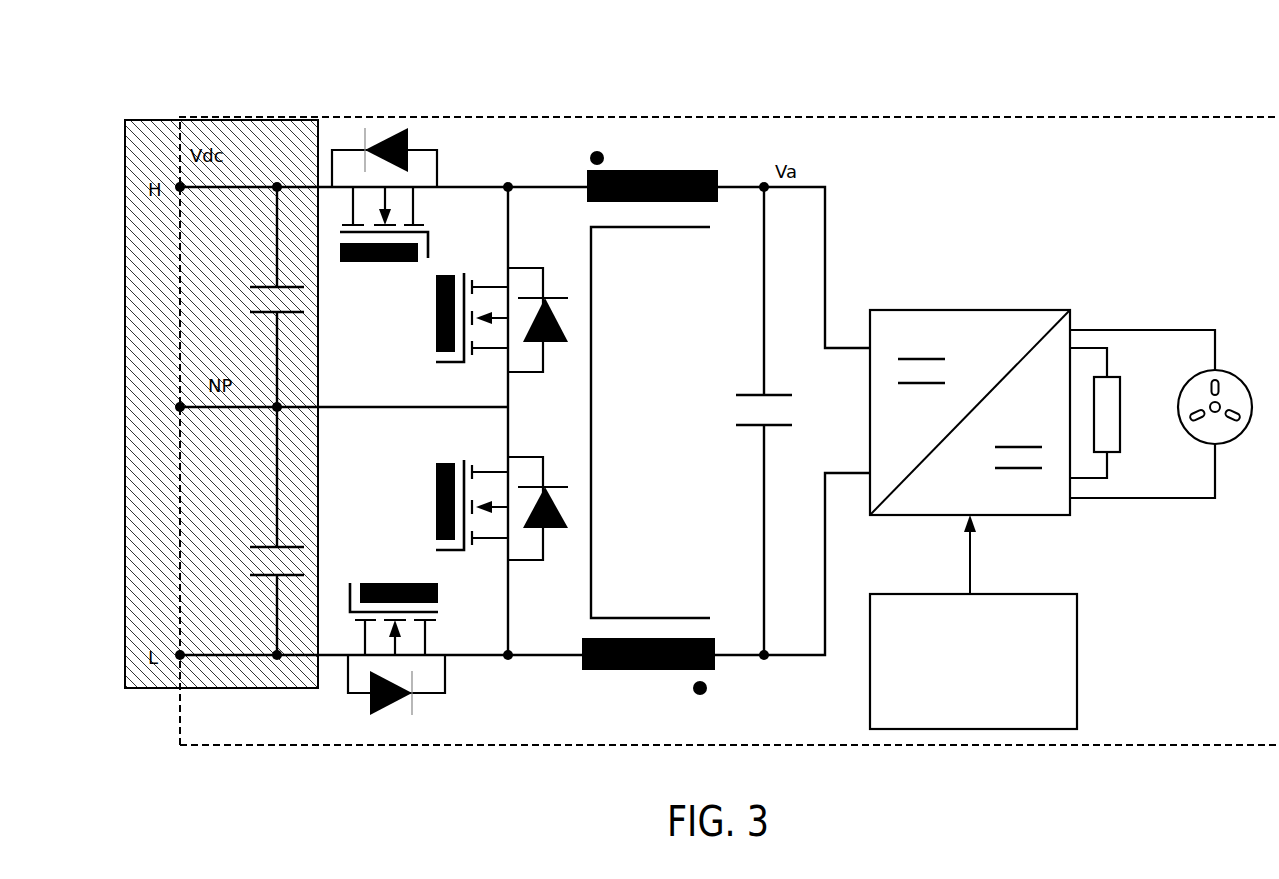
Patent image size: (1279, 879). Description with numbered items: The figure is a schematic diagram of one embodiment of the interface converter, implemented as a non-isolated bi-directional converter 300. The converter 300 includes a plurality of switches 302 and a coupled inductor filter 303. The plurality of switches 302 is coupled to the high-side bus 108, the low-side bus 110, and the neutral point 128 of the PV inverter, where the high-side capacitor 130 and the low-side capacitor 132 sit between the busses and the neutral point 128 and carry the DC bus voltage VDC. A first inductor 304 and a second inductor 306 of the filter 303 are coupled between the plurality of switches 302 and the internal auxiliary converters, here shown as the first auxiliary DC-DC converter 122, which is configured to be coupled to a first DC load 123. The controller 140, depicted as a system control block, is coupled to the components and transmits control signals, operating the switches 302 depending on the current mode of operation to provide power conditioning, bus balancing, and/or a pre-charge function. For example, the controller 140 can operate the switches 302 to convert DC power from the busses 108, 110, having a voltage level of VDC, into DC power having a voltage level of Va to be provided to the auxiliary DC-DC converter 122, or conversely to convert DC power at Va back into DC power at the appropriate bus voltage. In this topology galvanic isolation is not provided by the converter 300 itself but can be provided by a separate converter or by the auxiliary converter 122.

The non-isolated bi-directional converter 300 is at (945, 72).
The coupled inductor filter 303 is at (860, 198).
The high-side bus 108 is at (277, 183).
The low-side bus 110 is at (277, 660).
The neutral point 128 is at (180, 404).
The high-side capacitor 130 is at (266, 285).
The low-side capacitor 132 is at (268, 545).
The plurality of switches 302 is at (392, 265).
The first inductor 304 is at (645, 170).
The second inductor 306 is at (645, 672).
The first auxiliary DC-DC converter 122 is at (1040, 320).
The first DC load 123 is at (1228, 438).
The controller 140 is at (1077, 665).